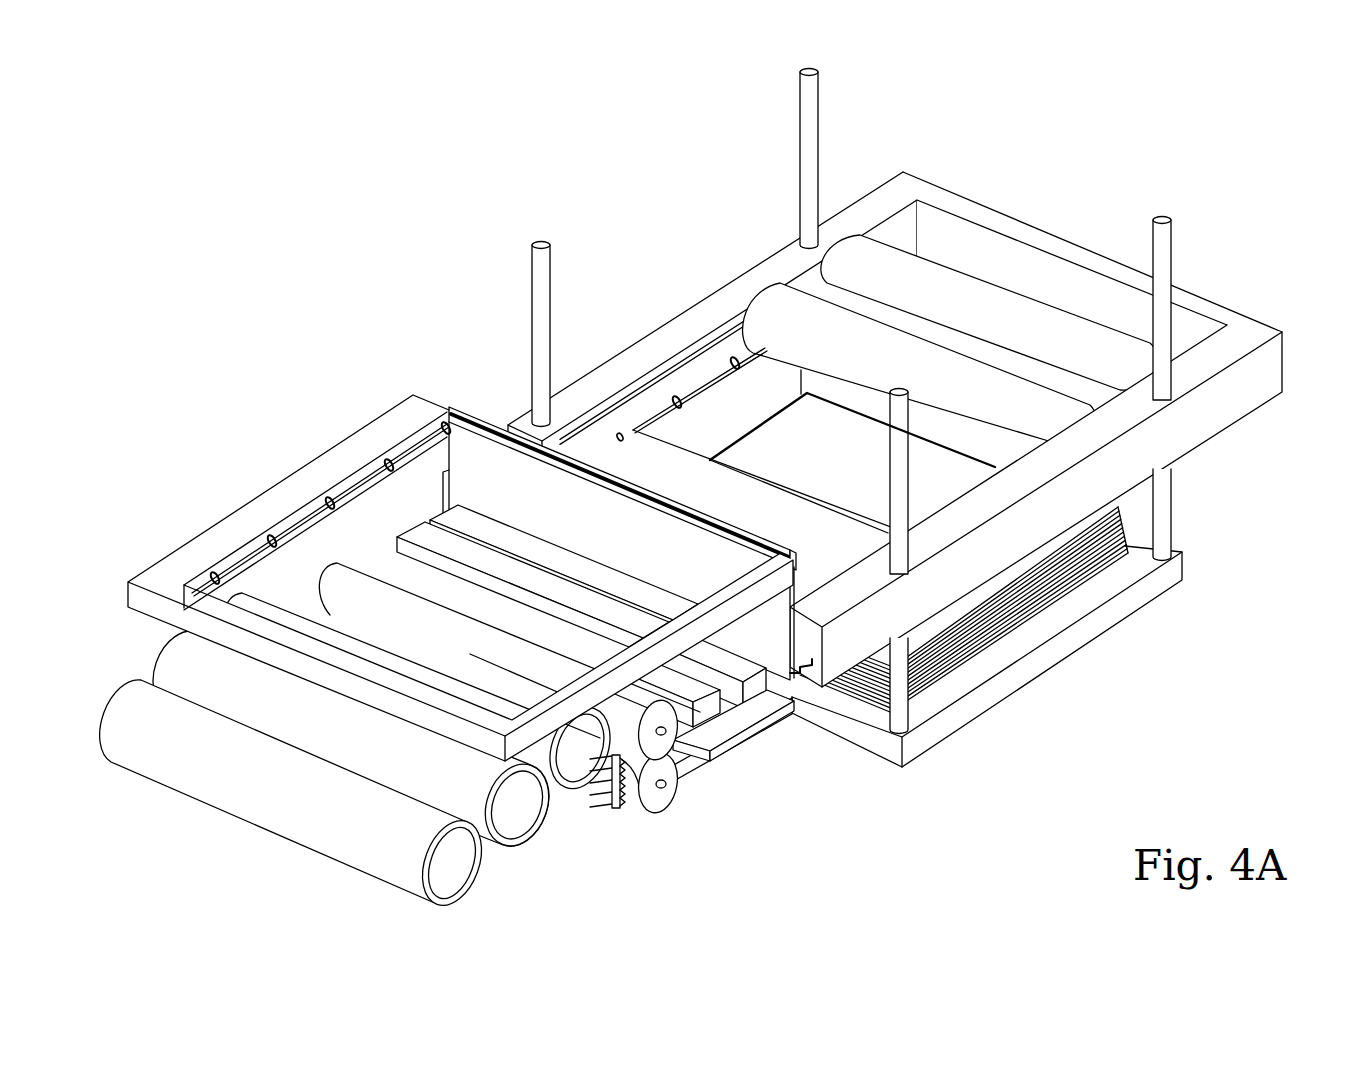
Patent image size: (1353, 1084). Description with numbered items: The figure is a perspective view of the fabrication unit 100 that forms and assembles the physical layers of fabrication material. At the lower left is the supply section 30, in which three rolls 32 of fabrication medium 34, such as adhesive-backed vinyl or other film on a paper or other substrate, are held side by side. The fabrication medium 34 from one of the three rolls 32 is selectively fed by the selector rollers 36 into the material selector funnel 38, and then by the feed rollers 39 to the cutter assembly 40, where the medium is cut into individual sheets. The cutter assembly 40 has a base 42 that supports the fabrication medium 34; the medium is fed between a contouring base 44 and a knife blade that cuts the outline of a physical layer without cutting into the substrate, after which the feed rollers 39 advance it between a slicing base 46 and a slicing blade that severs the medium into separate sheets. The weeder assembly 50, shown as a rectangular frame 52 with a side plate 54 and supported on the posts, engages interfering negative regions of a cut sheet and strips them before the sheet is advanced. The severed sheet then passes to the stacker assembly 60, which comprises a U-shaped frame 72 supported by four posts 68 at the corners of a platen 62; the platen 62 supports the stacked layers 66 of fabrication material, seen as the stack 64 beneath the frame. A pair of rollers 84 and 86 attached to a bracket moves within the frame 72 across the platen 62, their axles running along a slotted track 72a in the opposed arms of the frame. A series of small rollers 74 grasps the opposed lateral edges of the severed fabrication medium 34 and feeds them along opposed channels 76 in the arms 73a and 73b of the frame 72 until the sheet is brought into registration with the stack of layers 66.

The fabrication unit 100 is at (292, 210).
The roller feed unit 30 is at (276, 884).
The rolls 32 is at (220, 815).
The fabrication medium 34 is at (782, 518).
The selector rollers 36 is at (612, 805).
The material selector funnel 38 is at (638, 810).
The feed rollers 39 is at (648, 808).
The cutter assembly 40 is at (790, 766).
The base 42 is at (725, 758).
The contouring base 44 is at (715, 717).
The slicing base 46 is at (728, 672).
The weeder assembly 50 is at (250, 383).
The frame 52 is at (207, 526).
The side plate 54 is at (458, 410).
The stacker assembly 60 is at (603, 207).
The platen 62 is at (1165, 597).
The sheet stack 64 is at (1085, 598).
The stacked layers 66 is at (830, 488).
The posts 68 is at (1178, 236).
The U-shaped frame 72 is at (1002, 210).
The slotted track 72a is at (728, 335).
The arm 73a is at (620, 348).
The arm 73b is at (1230, 430).
The small rollers 74 is at (330, 500).
The channels 76 is at (364, 478).
The roller 84 is at (780, 292).
The roller 86 is at (940, 280).